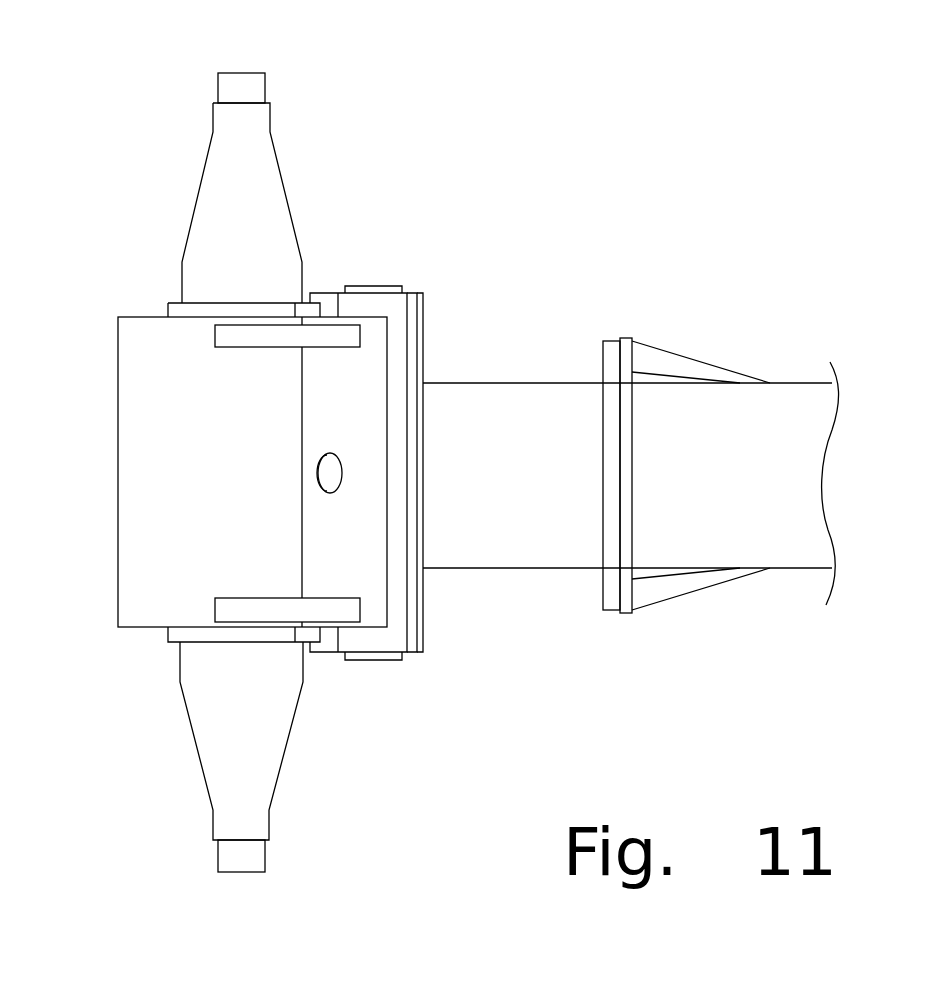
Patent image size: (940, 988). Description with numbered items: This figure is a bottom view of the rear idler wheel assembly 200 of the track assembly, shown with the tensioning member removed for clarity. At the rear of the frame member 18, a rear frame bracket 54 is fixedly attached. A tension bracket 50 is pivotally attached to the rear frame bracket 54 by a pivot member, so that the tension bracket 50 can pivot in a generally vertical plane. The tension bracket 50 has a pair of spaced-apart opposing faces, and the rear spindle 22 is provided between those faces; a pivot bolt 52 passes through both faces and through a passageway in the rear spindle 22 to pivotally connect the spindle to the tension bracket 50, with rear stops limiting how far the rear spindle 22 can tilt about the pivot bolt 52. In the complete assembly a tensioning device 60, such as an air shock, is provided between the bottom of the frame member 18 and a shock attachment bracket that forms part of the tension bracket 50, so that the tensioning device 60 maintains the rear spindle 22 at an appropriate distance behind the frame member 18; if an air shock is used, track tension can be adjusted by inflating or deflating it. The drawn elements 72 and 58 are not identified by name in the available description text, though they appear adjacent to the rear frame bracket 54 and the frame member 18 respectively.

The rear idler wheel assembly 200 is at (806, 127).
The rear spindle 22 is at (212, 185).
The tension bracket 50 is at (128, 450).
The pivot bolt 52 is at (336, 471).
The rear frame bracket 54 is at (410, 638).
The plate 72 is at (422, 592).
The tensioning device 60 is at (380, 660).
The frame member 18 is at (728, 484).
The flange bracket 58 is at (665, 592).